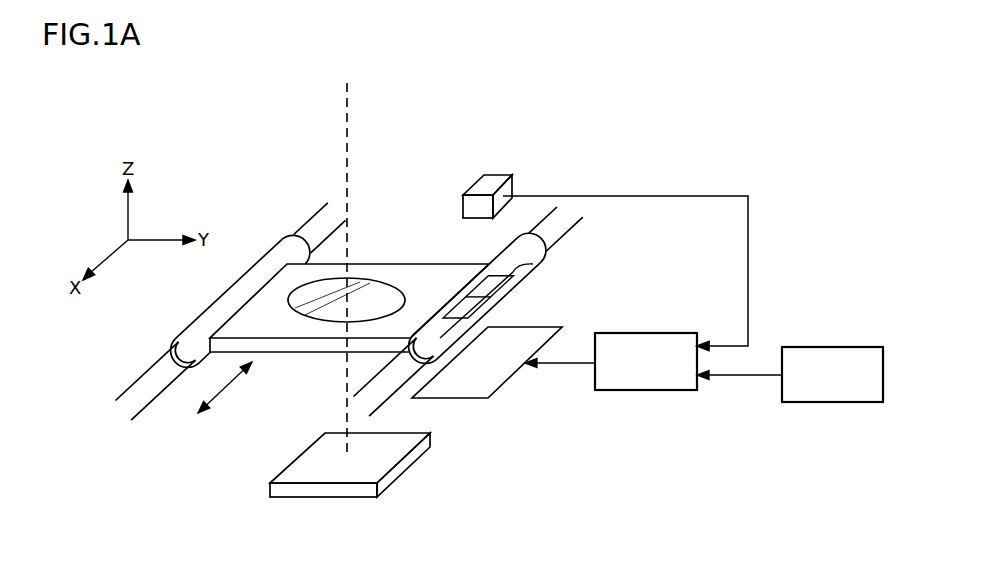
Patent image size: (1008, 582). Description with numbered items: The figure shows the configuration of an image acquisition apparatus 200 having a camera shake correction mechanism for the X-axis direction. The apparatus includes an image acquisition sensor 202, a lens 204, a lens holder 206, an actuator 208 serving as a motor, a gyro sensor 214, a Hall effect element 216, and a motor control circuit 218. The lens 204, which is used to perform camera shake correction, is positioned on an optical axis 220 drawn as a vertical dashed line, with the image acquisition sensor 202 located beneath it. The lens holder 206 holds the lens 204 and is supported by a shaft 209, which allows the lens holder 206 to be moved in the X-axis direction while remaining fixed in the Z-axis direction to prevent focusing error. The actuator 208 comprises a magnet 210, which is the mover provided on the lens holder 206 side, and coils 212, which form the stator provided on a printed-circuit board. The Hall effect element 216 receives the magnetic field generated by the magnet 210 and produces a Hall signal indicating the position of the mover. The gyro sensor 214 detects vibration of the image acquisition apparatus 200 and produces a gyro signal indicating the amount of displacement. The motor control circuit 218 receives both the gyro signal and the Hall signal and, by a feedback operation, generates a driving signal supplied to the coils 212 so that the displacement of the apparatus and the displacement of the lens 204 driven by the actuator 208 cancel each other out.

The image acquisition apparatus 200 is at (505, 560).
The image acquisition sensor 202 is at (400, 466).
The lens 204 is at (370, 297).
The lens holder 206 is at (287, 347).
The actuator 208 is at (523, 311).
The shaft 209 is at (148, 382).
The magnet 210 is at (543, 270).
The coils 212 is at (520, 337).
The gyro sensor 214 is at (817, 403).
The Hall effect element 216 is at (492, 178).
The motor control circuit 218 is at (653, 392).
The optical axis 220 is at (349, 117).